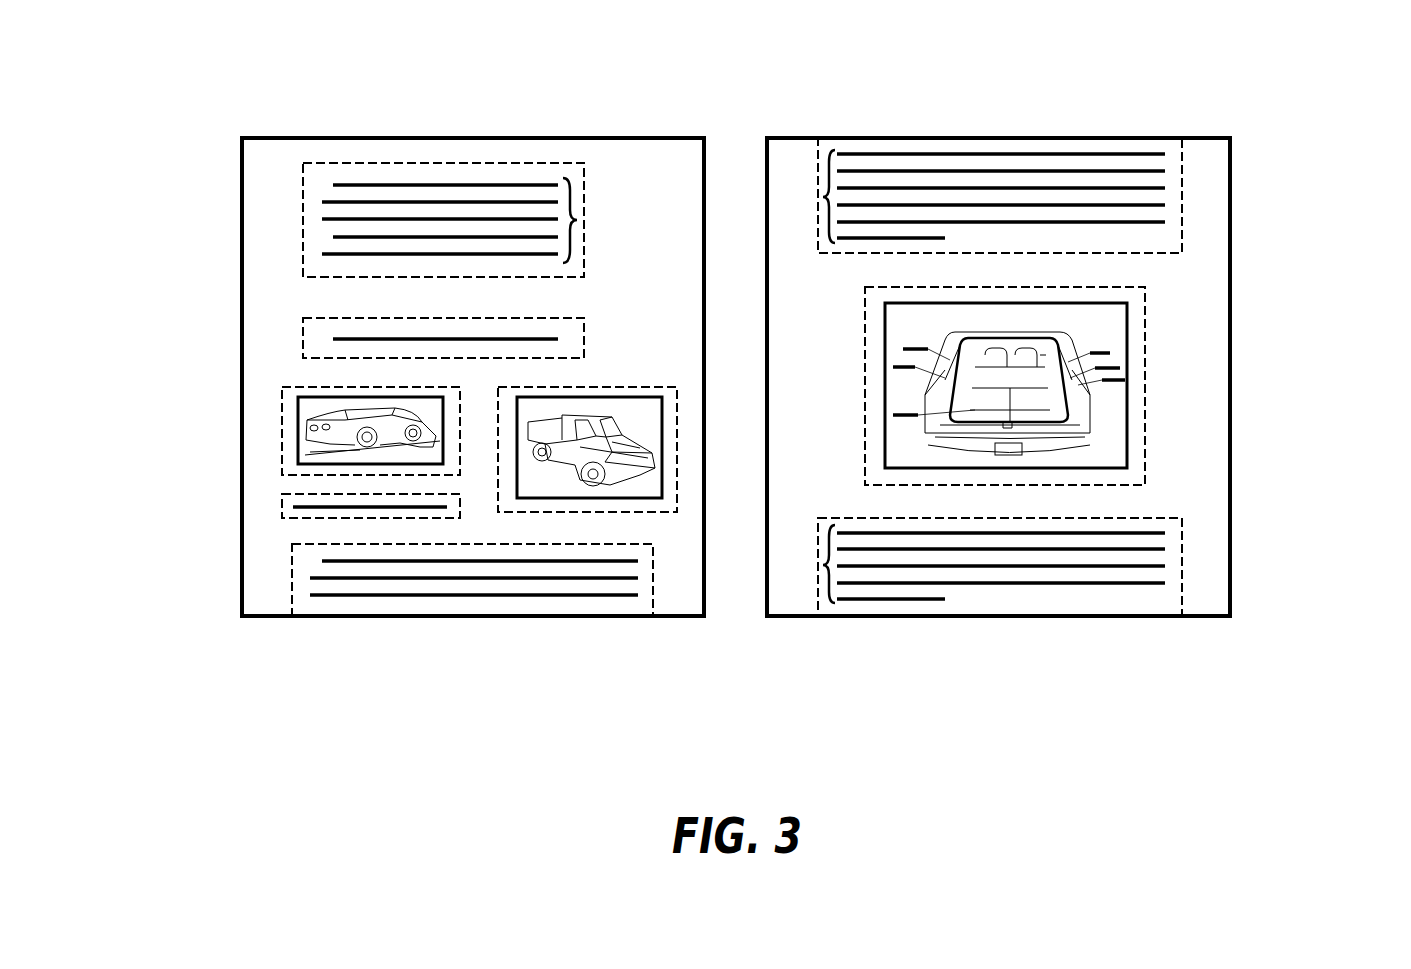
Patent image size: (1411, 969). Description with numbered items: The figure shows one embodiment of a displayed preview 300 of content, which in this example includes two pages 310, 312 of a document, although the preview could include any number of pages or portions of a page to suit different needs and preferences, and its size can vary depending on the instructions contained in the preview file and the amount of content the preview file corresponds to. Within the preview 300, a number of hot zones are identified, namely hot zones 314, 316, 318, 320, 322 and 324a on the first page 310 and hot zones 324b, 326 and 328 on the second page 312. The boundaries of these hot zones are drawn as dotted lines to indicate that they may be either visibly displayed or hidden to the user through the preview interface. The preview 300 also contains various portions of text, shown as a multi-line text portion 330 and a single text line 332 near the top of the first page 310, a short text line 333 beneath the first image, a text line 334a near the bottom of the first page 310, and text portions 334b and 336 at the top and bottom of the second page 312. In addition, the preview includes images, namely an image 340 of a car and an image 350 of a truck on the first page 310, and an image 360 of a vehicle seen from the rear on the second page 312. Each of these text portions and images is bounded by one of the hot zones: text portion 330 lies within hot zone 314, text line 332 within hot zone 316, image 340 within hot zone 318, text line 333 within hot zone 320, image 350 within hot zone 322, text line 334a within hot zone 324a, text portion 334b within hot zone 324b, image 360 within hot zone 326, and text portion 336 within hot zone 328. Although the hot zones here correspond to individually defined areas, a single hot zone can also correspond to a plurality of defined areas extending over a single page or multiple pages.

The displayed preview 300 is at (757, 53).
The page 310 is at (672, 325).
The page 312 is at (837, 325).
The hot zone 314 is at (303, 230).
The hot zone 316 is at (303, 338).
The hot zone 318 is at (282, 430).
The hot zone 320 is at (282, 508).
The hot zone 322 is at (675, 485).
The hot zone 324a is at (292, 576).
The hot zone 324b is at (1183, 203).
The hot zone 326 is at (1143, 407).
The hot zone 328 is at (1183, 561).
The portion of text 330 is at (577, 220).
The portion of text 332 is at (348, 340).
The portion of text 333 is at (302, 507).
The portion of text 334a is at (323, 595).
The portion of text 334b is at (823, 197).
The portion of text 336 is at (823, 565).
The image 340 is at (308, 438).
The image 350 is at (633, 478).
The image 360 is at (1070, 352).